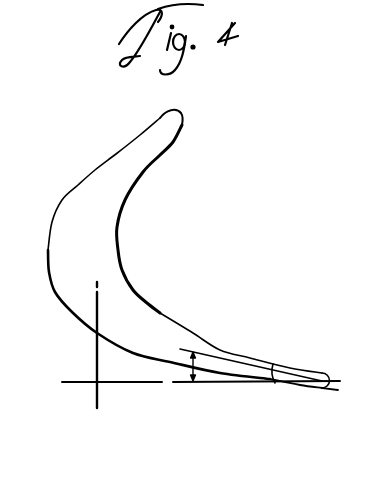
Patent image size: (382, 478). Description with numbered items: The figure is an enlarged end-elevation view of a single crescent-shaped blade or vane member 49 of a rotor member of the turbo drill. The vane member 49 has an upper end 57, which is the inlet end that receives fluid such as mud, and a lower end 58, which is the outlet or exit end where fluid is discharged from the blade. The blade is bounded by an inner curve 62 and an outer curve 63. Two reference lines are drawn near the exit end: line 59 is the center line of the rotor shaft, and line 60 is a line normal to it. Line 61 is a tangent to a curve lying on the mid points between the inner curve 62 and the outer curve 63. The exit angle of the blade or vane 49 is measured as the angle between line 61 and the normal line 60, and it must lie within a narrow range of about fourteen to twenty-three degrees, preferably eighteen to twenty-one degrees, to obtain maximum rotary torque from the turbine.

The blade or vane member 49 is at (181, 250).
The upper end 57 is at (184, 119).
The lower end 58 is at (293, 365).
The center line of the rotor shaft 59 is at (97, 350).
The normal line 60 is at (80, 383).
The tangent line 61 is at (220, 350).
The inner curve 62 is at (120, 247).
The outer curve 63 is at (48, 268).